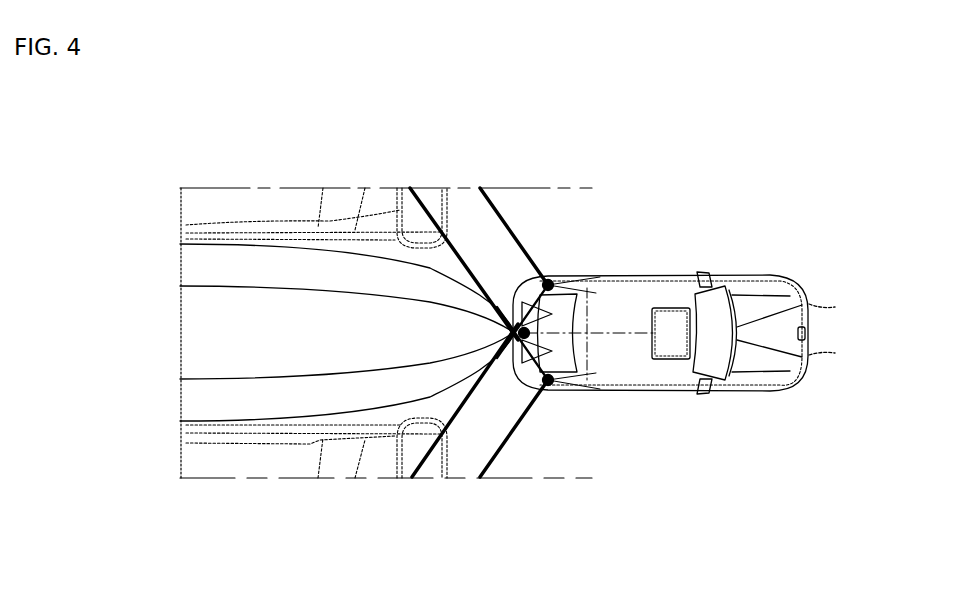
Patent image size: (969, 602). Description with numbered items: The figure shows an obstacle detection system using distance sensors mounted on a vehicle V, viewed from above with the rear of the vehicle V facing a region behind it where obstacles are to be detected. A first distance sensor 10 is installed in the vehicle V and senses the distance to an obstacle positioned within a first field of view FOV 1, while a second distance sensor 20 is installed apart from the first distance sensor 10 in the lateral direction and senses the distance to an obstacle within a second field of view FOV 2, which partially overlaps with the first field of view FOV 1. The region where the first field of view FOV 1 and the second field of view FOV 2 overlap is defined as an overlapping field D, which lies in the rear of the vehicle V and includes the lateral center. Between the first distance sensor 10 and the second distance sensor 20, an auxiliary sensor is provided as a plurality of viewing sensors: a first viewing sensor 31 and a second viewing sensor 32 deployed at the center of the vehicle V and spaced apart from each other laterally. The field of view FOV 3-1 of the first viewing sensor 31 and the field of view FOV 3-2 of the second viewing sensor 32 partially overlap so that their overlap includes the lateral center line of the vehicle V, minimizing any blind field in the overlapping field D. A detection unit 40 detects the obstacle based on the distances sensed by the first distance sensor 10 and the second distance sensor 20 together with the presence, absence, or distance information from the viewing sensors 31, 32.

The first distance sensor 10 is at (524, 302).
The second distance sensor 20 is at (551, 388).
The first viewing sensor 31 is at (552, 286).
The second viewing sensor 32 is at (557, 385).
The detection unit 40 is at (675, 334).
The vehicle V is at (810, 297).
The overlapping field D is at (405, 186).
The first field of view FOV 1 is at (512, 233).
The second field of view FOV 2 is at (511, 433).
The field of view of the first viewing sensor FOV 3-1 is at (207, 268).
The field of view of the second viewing sensor FOV 3-2 is at (207, 399).